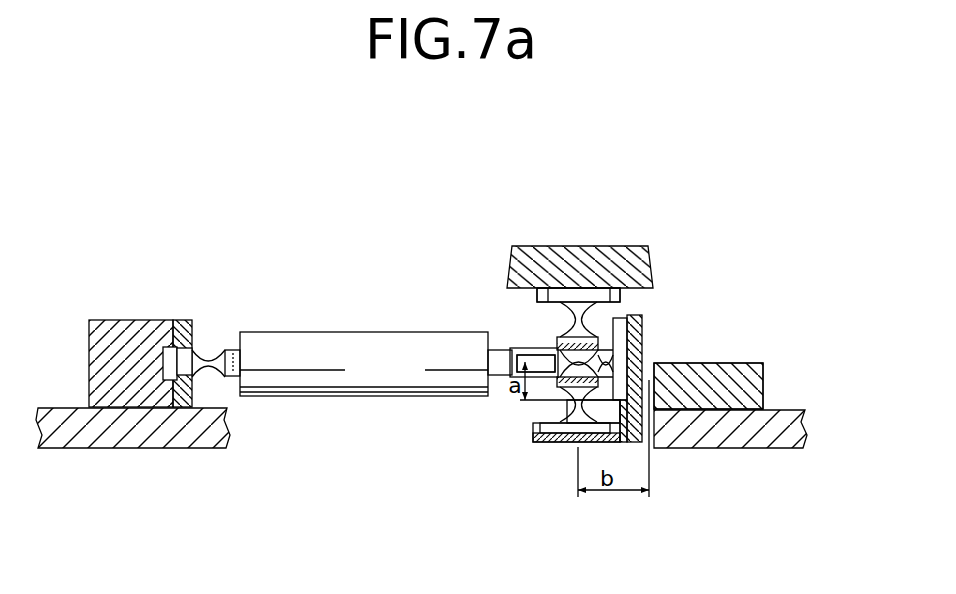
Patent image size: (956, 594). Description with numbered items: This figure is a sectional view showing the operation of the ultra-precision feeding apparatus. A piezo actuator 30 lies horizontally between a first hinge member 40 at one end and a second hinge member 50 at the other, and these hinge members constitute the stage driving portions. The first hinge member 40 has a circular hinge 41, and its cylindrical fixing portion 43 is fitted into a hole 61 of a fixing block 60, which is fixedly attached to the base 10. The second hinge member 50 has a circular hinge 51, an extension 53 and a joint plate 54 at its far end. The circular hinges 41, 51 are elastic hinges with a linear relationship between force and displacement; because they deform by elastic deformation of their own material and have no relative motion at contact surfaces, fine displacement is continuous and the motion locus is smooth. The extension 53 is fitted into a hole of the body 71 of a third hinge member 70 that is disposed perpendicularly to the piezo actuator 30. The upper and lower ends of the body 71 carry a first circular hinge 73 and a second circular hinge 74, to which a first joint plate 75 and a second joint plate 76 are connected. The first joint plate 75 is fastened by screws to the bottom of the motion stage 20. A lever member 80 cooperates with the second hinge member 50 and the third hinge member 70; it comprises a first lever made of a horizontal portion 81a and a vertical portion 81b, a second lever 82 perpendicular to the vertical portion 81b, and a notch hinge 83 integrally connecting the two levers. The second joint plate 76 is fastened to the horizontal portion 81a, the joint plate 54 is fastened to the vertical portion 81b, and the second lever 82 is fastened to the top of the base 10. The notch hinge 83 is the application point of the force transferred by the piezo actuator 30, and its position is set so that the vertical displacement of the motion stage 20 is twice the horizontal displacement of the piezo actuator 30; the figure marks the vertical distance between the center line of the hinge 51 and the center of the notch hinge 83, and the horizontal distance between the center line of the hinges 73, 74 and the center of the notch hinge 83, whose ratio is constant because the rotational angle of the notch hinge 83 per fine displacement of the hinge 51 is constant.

The base 10 is at (152, 430).
The motion stage 20 is at (541, 262).
The piezo actuator 30 is at (357, 345).
The first hinge member 40 is at (232, 340).
The circular hinge 41 is at (212, 357).
The cylindrical fixing portion 43 is at (168, 348).
The second hinge member 50 is at (512, 378).
The circular hinge 51 is at (634, 328).
The cylindrical extension 53 is at (517, 350).
The joint plate 54 is at (625, 380).
The fixing block 60 is at (106, 335).
The hole 61 is at (166, 364).
The third hinge member 70 is at (636, 296).
The body 71 is at (495, 386).
The first circular hinge 73 is at (575, 318).
The second circular hinge 74 is at (572, 408).
The first joint plate 75 is at (592, 288).
The second joint plate 76 is at (545, 425).
The lever member 80 is at (772, 358).
The horizontal portion 81a is at (567, 442).
The vertical portion 81b is at (647, 332).
The second lever 82 is at (765, 386).
The notch hinge 83 is at (655, 395).